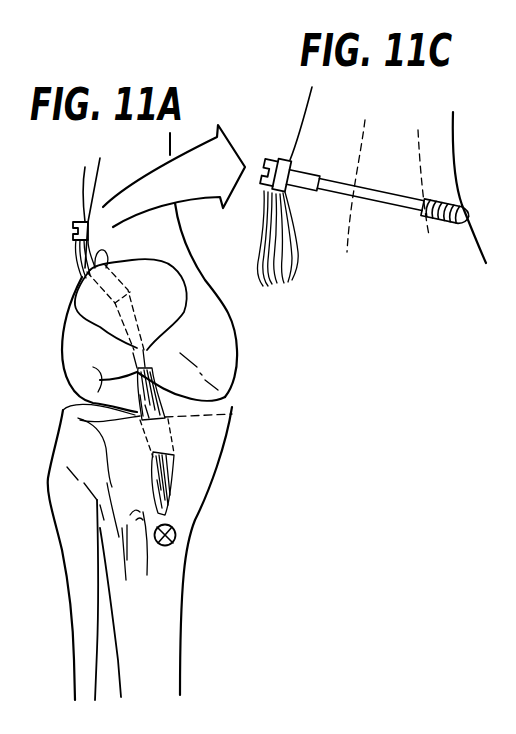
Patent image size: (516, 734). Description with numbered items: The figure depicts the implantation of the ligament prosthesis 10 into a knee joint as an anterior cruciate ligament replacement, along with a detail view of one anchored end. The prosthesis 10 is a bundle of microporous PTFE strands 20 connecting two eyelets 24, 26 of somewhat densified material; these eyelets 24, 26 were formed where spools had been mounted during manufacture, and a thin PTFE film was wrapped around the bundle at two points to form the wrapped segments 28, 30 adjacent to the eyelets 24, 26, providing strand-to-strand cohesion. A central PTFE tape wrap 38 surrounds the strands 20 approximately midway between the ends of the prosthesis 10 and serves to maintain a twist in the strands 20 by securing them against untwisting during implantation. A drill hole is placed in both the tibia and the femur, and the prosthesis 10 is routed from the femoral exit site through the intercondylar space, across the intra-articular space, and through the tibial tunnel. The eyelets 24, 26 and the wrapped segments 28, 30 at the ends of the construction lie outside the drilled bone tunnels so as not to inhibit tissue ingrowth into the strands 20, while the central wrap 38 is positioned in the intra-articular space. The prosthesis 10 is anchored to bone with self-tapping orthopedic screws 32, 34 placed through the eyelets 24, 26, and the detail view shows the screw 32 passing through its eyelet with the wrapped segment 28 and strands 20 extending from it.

In FIG. 11A, the prosthesis 10 is at (243, 408).
In FIG. 11C, the strands 20 is at (276, 280).
In FIG. 11A, the eyelet 24 is at (86, 204).
In FIG. 11A, the eyelet 26 is at (155, 543).
In FIG. 11A, the PTFE wrap 28 is at (78, 249).
In FIG. 11C, the PTFE wrap 28 is at (267, 201).
In FIG. 11A, the PTFE wrap 30 is at (168, 517).
In FIG. 11A, the self-tapping orthopedic screw 32 is at (73, 222).
In FIG. 11C, the self-tapping orthopedic screw 32 is at (267, 160).
In FIG. 11A, the self-tapping orthopedic screw 34 is at (176, 541).
In FIG. 11A, the PTFE tape wrap 38 is at (100, 380).